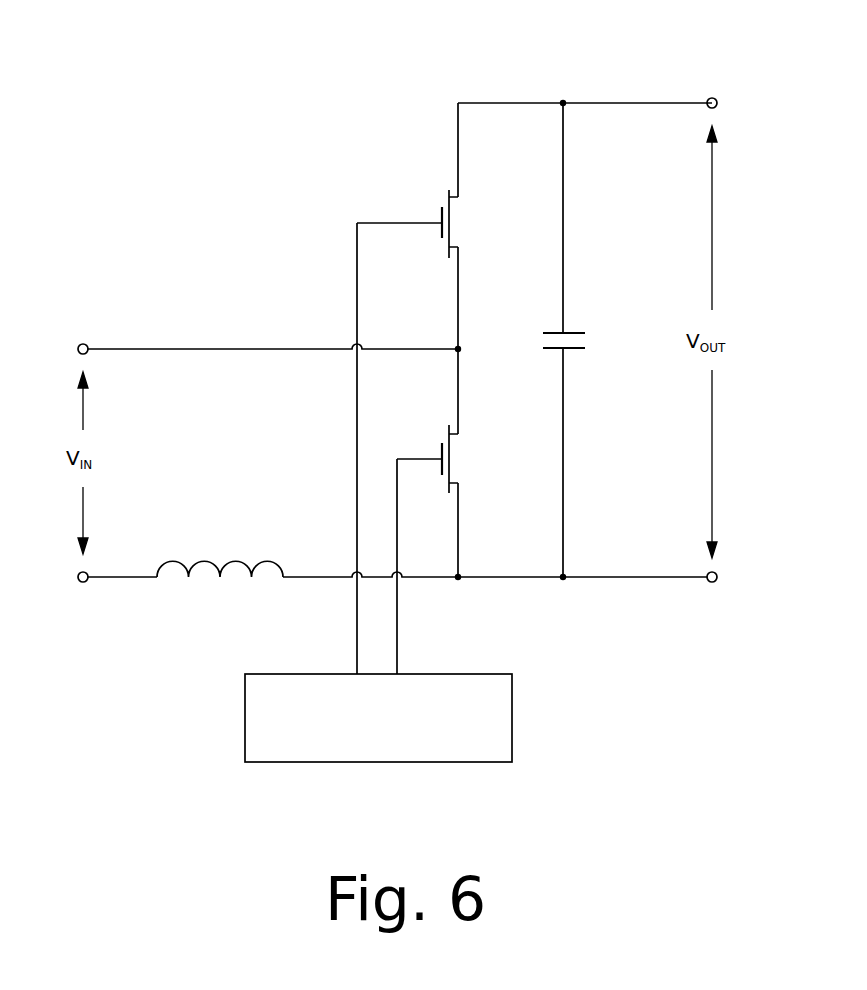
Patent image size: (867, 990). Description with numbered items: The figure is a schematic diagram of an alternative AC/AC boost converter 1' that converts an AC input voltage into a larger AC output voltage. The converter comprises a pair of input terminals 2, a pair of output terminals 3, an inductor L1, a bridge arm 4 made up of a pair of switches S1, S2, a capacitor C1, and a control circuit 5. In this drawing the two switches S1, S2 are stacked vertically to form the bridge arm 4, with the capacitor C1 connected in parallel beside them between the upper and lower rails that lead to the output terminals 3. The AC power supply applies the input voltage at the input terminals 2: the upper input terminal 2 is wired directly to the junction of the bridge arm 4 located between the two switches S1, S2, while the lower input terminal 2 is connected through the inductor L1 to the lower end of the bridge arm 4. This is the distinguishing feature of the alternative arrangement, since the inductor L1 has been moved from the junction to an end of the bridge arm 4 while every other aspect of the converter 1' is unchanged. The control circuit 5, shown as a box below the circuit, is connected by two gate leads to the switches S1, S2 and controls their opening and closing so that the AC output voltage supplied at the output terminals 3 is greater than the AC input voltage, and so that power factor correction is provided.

The AC/AC boost converter 1' is at (147, 127).
The input terminals 2 is at (82, 343).
The output terminals 3 is at (711, 97).
The bridge arm 4 is at (456, 135).
The control circuit 5 is at (245, 720).
The switch S1 is at (472, 459).
The switch S2 is at (473, 224).
The inductor L1 is at (220, 549).
The capacitor C1 is at (589, 340).